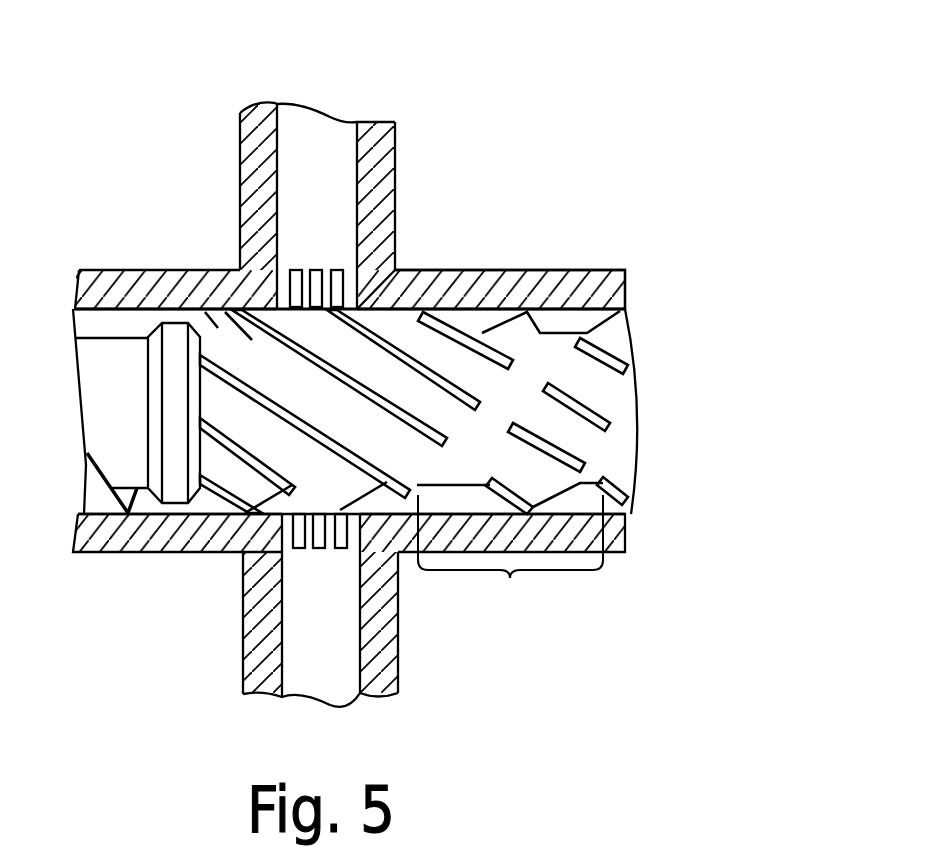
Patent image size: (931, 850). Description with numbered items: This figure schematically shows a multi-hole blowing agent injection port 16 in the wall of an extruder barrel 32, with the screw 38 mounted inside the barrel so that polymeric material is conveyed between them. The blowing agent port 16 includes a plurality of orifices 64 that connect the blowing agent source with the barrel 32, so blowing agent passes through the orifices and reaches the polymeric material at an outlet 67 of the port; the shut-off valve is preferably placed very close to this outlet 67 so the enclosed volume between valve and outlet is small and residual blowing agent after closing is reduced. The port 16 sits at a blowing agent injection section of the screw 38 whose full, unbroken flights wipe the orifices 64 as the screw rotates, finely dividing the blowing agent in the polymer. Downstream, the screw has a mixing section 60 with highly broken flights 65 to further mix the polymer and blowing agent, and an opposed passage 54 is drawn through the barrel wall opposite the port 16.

The blowing agent port 16 is at (315, 106).
The barrel 32 is at (122, 540).
The screw 38 is at (215, 340).
The outlet conduit 54 is at (315, 582).
The mixing section 60 is at (510, 554).
The orifices 64 is at (342, 270).
The helical flights 65 is at (262, 401).
The outlet 67 is at (285, 306).